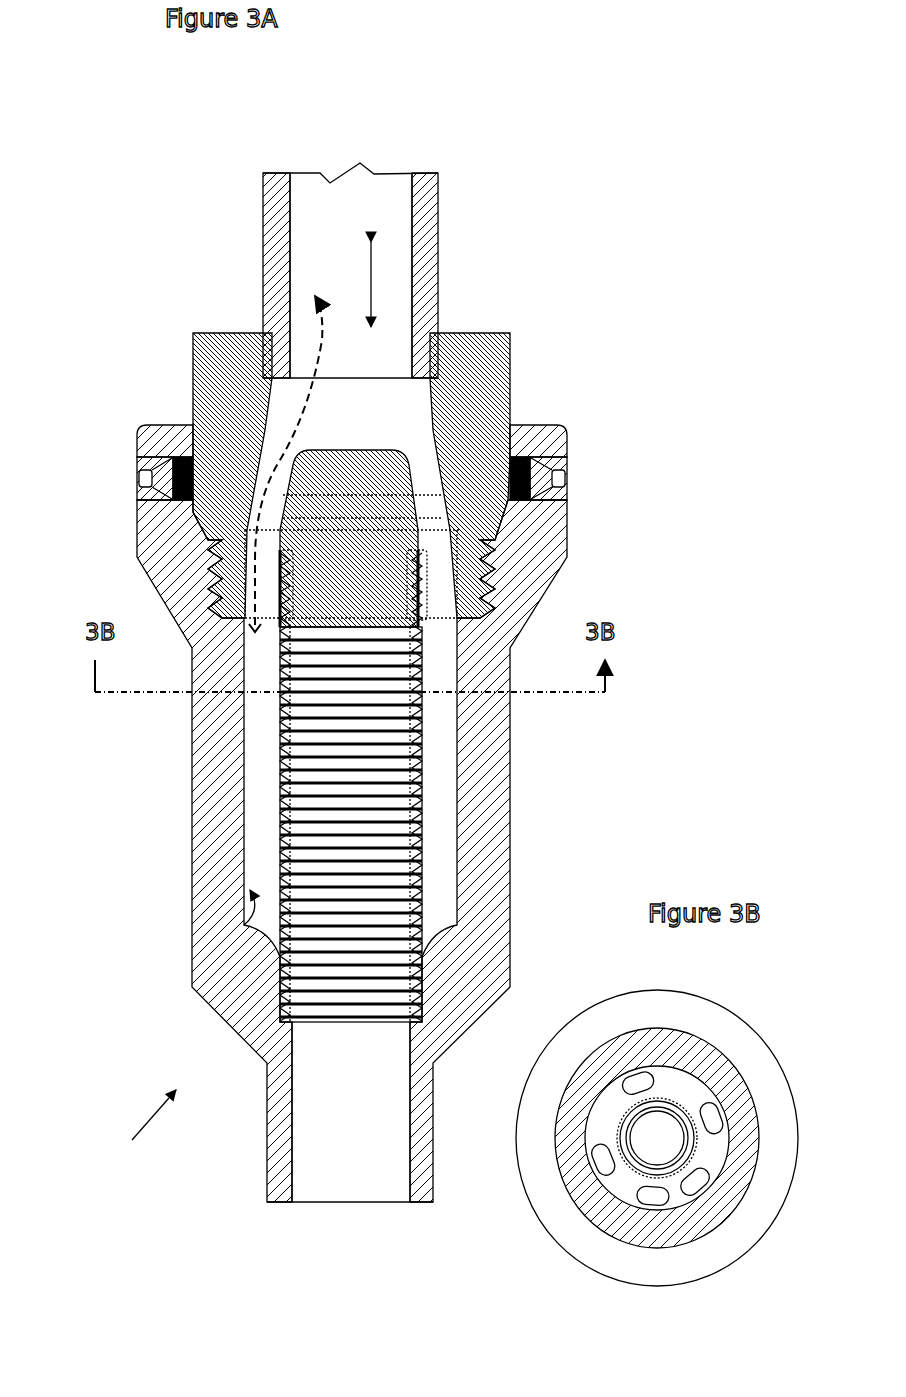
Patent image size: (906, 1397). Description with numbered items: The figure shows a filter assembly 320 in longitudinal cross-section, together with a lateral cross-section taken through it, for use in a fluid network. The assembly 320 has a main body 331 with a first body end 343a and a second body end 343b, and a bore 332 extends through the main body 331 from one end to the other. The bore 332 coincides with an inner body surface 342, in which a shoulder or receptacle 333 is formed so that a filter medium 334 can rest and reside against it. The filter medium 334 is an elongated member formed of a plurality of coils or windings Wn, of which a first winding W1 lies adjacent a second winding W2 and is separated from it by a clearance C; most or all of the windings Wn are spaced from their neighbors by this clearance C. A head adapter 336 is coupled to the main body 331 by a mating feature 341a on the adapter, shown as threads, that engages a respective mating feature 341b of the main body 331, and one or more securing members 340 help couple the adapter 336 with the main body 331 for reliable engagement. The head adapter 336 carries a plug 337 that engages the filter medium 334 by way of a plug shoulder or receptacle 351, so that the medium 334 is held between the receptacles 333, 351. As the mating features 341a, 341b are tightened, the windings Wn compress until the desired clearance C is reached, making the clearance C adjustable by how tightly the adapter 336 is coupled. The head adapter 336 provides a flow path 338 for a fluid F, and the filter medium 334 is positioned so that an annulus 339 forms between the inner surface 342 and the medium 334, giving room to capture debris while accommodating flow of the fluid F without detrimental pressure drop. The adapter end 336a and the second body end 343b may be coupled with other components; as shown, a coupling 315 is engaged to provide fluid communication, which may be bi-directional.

In FIG. 3A, the coupling 315 is at (272, 212).
In FIG. 3A, the fluid F is at (378, 284).
In FIG. 3A, the head adapter 336 is at (498, 402).
In FIG. 3A, the head adapter end 336a is at (473, 346).
In FIG. 3A, the flow path 338 is at (283, 463).
In FIG. 3A, the securing member 340 is at (158, 463).
In FIG. 3B, the securing member 340 is at (680, 1185).
In FIG. 3A, the first body end 343a is at (140, 535).
In FIG. 3B, the first body end 343a is at (555, 1228).
In FIG. 3A, the mating feature of head adapter 341a is at (216, 570).
In FIG. 3A, the mating feature of main body 341b is at (210, 607).
In FIG. 3A, the plug shoulder 351 is at (408, 550).
In FIG. 3A, the plug 337 is at (383, 573).
In FIG. 3B, the plug 337 is at (657, 1138).
In FIG. 3A, the windings Wn is at (280, 720).
In FIG. 3A, the main body 331 is at (205, 848).
In FIG. 3B, the main body 331 is at (660, 1240).
In FIG. 3A, the annulus 339 is at (262, 852).
In FIG. 3A, the inner body surface 342 is at (245, 927).
In FIG. 3A, the filter medium 334 is at (320, 930).
In FIG. 3B, the filter medium 334 is at (617, 1122).
In FIG. 3A, the receptacle 333 is at (418, 1010).
In FIG. 3A, the filter assembly 320 is at (140, 1135).
In FIG. 3A, the second body end 343b is at (285, 1190).
In FIG. 3A, the bore 332 is at (353, 1100).
In FIG. 3A, the second winding W2 is at (420, 812).
In FIG. 3A, the clearance C is at (428, 825).
In FIG. 3A, the first winding W1 is at (420, 832).